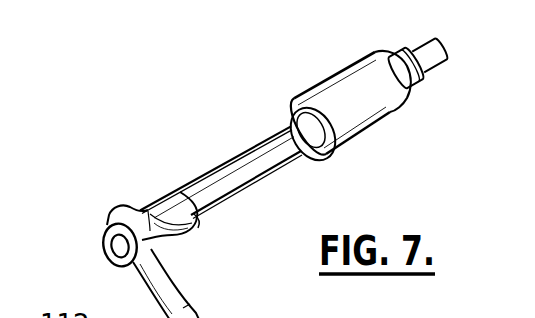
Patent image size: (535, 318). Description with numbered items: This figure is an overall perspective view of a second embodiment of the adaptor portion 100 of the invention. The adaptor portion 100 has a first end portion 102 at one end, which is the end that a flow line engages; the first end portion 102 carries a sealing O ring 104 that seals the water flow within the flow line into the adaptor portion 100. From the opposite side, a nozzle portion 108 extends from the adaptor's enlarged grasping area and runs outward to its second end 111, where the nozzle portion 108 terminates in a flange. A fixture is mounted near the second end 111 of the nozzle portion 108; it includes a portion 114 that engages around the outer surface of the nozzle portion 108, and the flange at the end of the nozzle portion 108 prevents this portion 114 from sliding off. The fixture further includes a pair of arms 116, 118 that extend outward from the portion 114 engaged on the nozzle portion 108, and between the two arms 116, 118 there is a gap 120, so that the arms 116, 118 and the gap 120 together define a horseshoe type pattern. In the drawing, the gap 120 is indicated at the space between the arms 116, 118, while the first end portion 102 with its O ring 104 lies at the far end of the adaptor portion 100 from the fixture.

The adaptor portion 100 is at (226, 94).
The first end portion 102 is at (436, 39).
The sealing O ring 104 is at (346, 109).
The nozzle portion 108 is at (209, 174).
The second end 111 is at (96, 240).
The portion for engaging around the outer surface of the nozzle 114 is at (102, 207).
The arm 116 is at (180, 303).
The arm 118 is at (191, 218).
The gap 120 is at (169, 250).